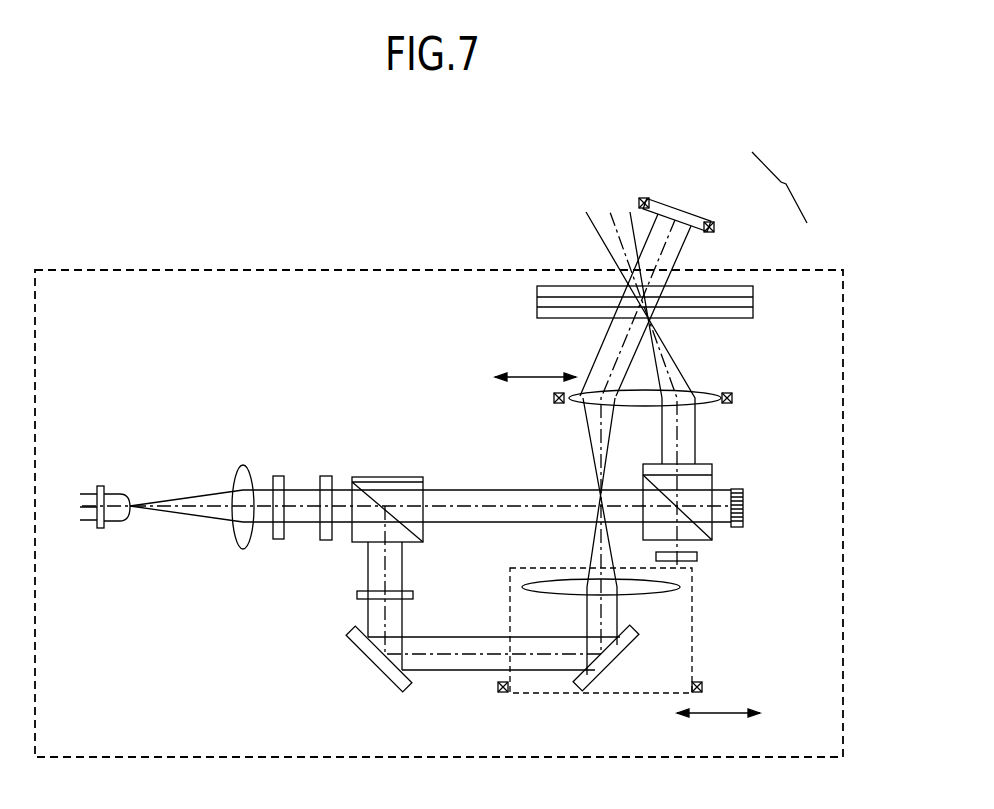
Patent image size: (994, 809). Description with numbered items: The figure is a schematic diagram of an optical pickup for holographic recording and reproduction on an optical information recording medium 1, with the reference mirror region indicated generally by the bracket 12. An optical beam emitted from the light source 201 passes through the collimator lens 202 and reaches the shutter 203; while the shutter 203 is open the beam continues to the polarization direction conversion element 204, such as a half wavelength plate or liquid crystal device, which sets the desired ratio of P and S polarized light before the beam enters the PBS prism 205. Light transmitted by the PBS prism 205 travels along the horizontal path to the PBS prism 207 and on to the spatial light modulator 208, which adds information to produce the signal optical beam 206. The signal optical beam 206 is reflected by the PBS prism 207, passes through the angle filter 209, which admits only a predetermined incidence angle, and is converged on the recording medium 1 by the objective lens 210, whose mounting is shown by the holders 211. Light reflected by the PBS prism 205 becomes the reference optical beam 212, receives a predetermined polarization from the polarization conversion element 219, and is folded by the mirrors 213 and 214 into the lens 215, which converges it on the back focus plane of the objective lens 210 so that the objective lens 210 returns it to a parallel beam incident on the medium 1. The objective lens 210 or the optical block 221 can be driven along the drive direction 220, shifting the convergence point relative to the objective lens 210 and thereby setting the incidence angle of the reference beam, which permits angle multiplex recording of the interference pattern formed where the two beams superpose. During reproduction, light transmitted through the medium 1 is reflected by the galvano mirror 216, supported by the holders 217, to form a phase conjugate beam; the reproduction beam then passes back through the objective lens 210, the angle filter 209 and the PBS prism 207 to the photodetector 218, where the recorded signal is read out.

The optical information recording medium 1 is at (537, 300).
The optical head 12 is at (782, 187).
The light source 201 is at (112, 490).
The collimator lens 202 is at (242, 466).
The shutter 203 is at (278, 476).
The polarization direction conversion element 204 is at (327, 476).
The PBS prism 205 is at (388, 477).
The signal optical beam 206 is at (461, 497).
The PBS prism 207 is at (713, 484).
The spatial light modulator 208 is at (745, 504).
The angle filter 209 is at (713, 464).
The objective lens 210 is at (701, 391).
The lens actuator 211 is at (733, 398).
The reference optical beam 212 is at (455, 640).
The mirror 213 is at (362, 650).
The mirror 214 is at (618, 688).
The lens 215 is at (680, 588).
The galvano mirror 216 is at (683, 212).
The mirror actuator 217 is at (717, 227).
The photodetector 218 is at (699, 556).
The polarization conversion element 219 is at (357, 595).
The drive direction 220 is at (536, 388).
The optical block 221 is at (536, 693).